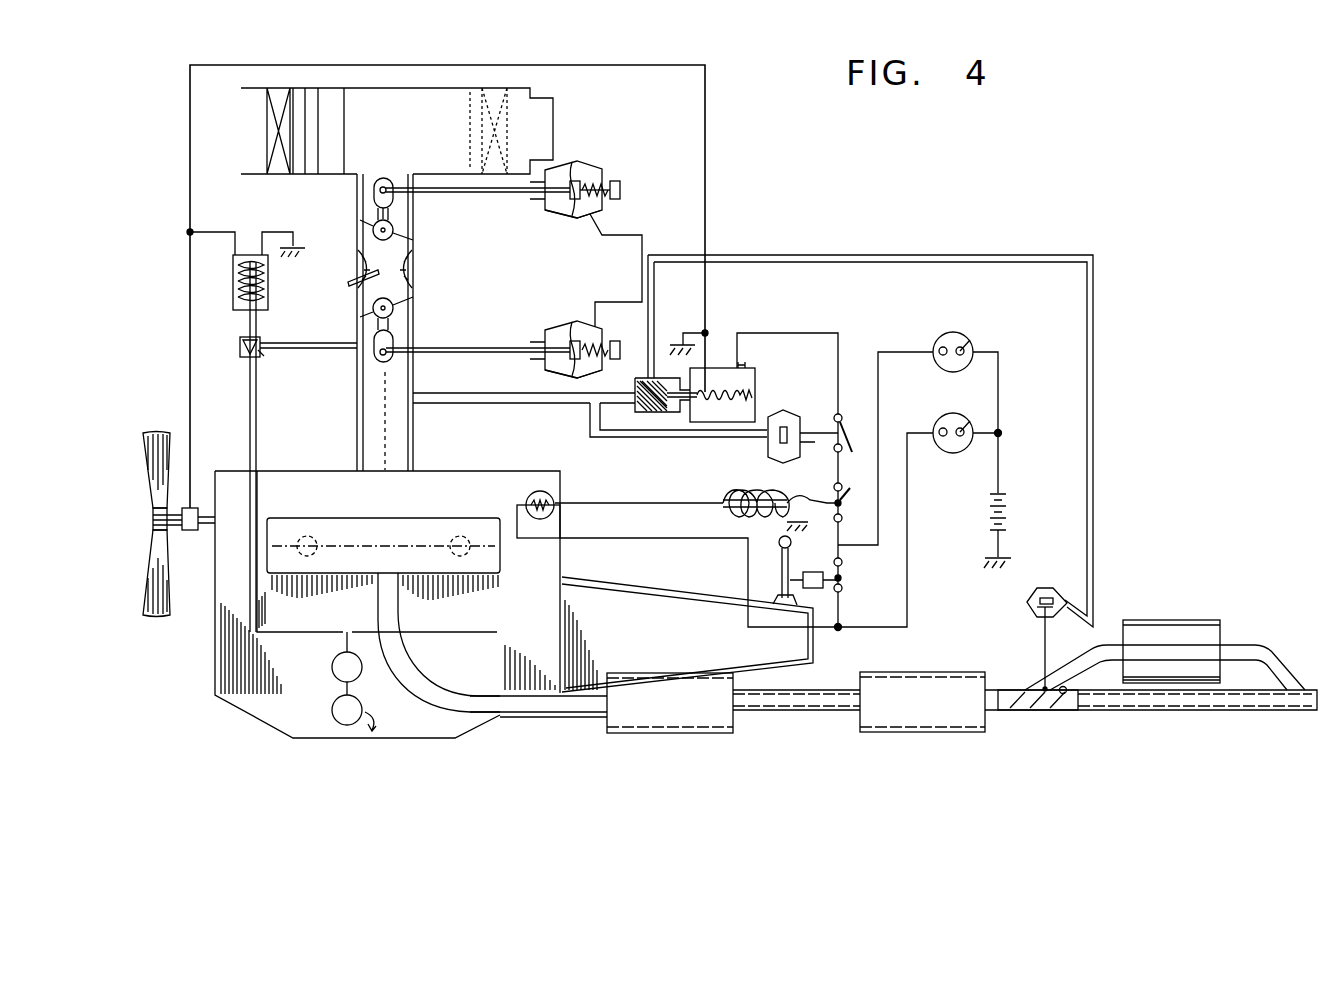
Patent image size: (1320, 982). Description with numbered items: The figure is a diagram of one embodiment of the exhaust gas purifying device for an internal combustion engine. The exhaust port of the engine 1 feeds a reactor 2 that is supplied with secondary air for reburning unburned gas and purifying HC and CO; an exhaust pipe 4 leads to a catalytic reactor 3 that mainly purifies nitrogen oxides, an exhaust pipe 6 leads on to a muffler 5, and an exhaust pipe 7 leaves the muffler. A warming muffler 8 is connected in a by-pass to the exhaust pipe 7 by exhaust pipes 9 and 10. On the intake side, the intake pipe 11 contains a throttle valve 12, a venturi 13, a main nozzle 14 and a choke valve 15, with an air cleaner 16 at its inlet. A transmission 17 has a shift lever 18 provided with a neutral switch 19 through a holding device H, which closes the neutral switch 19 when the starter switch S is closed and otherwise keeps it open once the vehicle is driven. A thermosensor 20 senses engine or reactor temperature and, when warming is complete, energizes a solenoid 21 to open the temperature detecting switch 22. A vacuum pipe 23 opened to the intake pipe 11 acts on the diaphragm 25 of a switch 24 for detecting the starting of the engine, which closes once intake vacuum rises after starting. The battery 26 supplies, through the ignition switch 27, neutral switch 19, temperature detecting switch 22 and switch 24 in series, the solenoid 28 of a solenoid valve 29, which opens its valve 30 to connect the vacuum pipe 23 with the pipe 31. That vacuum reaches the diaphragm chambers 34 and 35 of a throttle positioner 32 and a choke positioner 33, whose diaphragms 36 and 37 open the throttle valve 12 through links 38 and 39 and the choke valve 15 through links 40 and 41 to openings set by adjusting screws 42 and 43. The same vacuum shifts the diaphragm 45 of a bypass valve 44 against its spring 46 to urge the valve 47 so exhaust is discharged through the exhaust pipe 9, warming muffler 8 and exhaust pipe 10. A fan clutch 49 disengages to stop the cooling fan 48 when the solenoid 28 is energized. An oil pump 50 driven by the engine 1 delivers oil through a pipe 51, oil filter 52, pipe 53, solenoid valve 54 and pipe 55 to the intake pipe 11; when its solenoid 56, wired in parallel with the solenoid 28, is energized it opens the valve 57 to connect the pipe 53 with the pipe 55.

The engine 1 is at (300, 484).
The reactor 2 is at (335, 578).
The catalytic reactor 3 is at (665, 676).
The exhaust pipe 4 is at (563, 717).
The muffler 5 is at (922, 674).
The exhaust pipe 6 is at (816, 692).
The exhaust pipe 7 is at (1095, 712).
The warming muffler 8 is at (1170, 622).
The exhaust pipe 9 is at (1077, 658).
The exhaust pipe 10 is at (1236, 645).
The intake pipe 11 is at (357, 428).
The throttle valve 12 is at (413, 316).
The venturi 13 is at (412, 278).
The main nozzle 14 is at (357, 248).
The choke valve 15 is at (405, 238).
The air cleaner 16 is at (500, 178).
The transmission 17 is at (660, 588).
The shift lever 18 is at (780, 566).
The neutral switch 19 is at (848, 580).
The thermosensor 20 is at (525, 500).
The solenoid 21 is at (750, 492).
The temperature detecting switch 22 is at (844, 503).
The vacuum pipe 23 is at (455, 398).
The switch for detecting the starting of the engine 24 is at (843, 418).
The diaphragm 25 is at (792, 455).
The battery 26 is at (1009, 510).
The ignition switch 27 is at (953, 413).
The solenoid 28 is at (754, 398).
The solenoid valve 29 is at (668, 343).
The valve 30 is at (648, 413).
The pipe 31 is at (608, 236).
The throttle positioner 32 is at (566, 323).
The choke positioner 33 is at (580, 160).
The diaphragm chamber 34 is at (585, 373).
The diaphragm chamber 35 is at (600, 176).
The diaphragm 36 is at (546, 373).
The diaphragm 37 is at (560, 218).
The link 38 is at (474, 358).
The link 39 is at (383, 364).
The link 40 is at (520, 195).
The link 41 is at (395, 178).
The opening adjusting screw 42 is at (607, 344).
The opening adjusting screw 43 is at (622, 190).
The bypass valve 44 is at (1019, 608).
The diaphragm 45 is at (1047, 588).
The spring 46 is at (1042, 616).
The valve 47 is at (1020, 690).
The cooling fan 48 is at (160, 432).
The fan clutch 49 is at (192, 531).
The oil pump 50 is at (334, 712).
The pipe 51 is at (353, 690).
The oil filter 52 is at (332, 665).
The pipe 53 is at (257, 434).
The solenoid valve 54 is at (233, 329).
The pipe 55 is at (320, 344).
The solenoid 56 is at (268, 284).
The valve 57 is at (262, 356).
The starter switch S is at (943, 335).
The holding device H is at (830, 590).